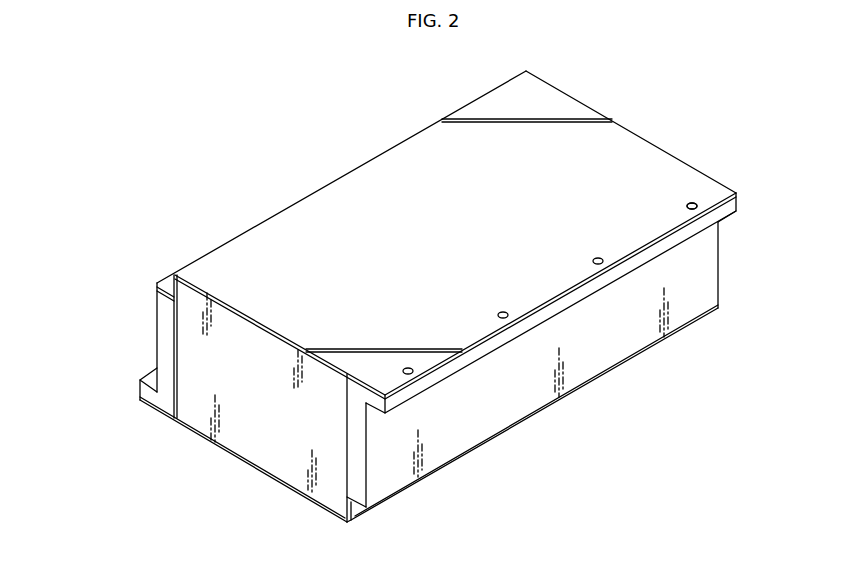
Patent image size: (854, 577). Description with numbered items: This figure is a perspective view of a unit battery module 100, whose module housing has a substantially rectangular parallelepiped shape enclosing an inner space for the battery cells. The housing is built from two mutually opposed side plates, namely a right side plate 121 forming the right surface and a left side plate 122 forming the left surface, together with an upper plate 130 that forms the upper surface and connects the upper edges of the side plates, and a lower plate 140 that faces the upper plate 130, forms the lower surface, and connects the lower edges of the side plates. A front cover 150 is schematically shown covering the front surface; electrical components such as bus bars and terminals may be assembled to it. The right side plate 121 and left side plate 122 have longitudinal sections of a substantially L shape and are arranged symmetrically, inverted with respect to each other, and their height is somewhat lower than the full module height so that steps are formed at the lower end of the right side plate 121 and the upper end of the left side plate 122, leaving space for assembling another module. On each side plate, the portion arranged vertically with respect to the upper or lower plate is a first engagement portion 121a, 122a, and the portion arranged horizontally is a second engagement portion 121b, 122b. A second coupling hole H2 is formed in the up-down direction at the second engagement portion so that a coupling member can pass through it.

The unit battery module 100 is at (301, 136).
The upper plate 130 is at (617, 140).
The second coupling hole H2 is at (697, 202).
The right side plate 121 is at (795, 190).
The first engagement portion 121a is at (707, 273).
The second engagement portion 121b is at (731, 207).
The left side plate 122 is at (75, 315).
The first engagement portion 122a is at (165, 333).
The second engagement portion 122b is at (143, 391).
The front cover 150 is at (250, 435).
The lower plate 140 is at (270, 477).